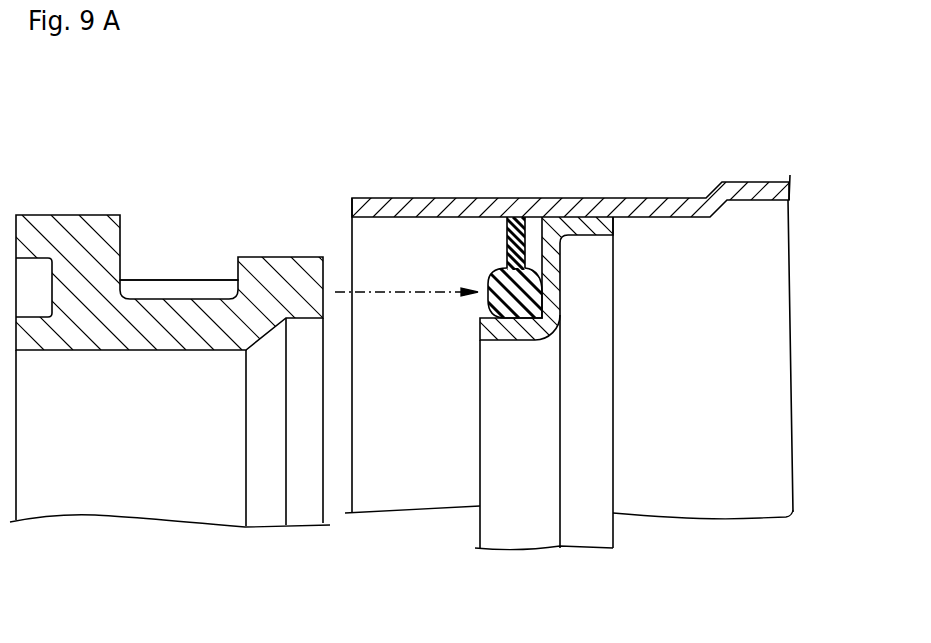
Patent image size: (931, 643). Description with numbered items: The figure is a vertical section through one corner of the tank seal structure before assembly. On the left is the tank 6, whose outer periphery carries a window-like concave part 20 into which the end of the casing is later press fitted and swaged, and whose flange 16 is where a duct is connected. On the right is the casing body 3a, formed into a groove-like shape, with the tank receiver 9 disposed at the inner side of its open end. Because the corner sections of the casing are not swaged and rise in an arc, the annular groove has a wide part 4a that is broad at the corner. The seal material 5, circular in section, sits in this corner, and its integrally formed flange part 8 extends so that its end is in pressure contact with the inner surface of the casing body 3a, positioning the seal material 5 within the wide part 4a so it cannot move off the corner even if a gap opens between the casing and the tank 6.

The casing body 3a is at (735, 182).
The wide part 4a is at (547, 251).
The seal material 5 is at (490, 282).
The tank 6 is at (86, 214).
The flange part 8 is at (507, 248).
The tank receiver 9 is at (598, 240).
The flange 16 is at (17, 236).
The concave part 20 is at (192, 298).